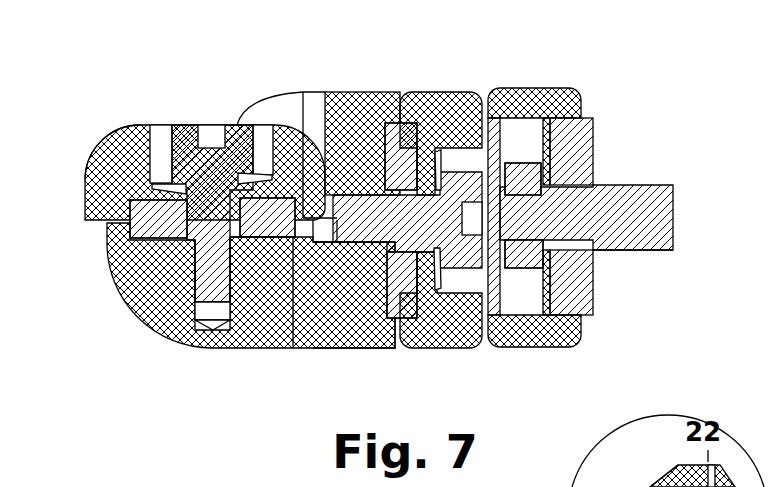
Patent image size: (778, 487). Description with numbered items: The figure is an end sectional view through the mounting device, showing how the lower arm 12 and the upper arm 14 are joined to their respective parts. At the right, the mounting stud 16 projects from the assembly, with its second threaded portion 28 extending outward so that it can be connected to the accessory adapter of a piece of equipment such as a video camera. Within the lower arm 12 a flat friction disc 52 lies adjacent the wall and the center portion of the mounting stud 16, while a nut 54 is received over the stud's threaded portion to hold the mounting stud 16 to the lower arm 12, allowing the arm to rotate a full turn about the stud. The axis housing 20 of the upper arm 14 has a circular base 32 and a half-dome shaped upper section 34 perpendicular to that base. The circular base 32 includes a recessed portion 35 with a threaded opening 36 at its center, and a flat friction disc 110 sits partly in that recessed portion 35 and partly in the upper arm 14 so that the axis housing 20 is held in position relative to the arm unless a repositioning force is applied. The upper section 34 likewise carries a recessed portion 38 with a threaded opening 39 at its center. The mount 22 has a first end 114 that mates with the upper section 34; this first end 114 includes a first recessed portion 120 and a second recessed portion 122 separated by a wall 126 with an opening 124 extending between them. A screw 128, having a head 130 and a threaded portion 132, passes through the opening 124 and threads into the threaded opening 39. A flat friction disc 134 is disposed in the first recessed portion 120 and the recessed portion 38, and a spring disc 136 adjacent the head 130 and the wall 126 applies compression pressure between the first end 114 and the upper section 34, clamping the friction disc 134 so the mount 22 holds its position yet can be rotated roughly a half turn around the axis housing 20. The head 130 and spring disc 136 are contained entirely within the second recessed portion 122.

The lower arm 12 is at (572, 352).
The upper arm 14 is at (455, 350).
The mounting stud 16 is at (645, 183).
The axis housing 20 is at (297, 350).
The mount 22 is at (85, 173).
The second threaded portion 28 is at (661, 252).
The circular base 32 is at (358, 350).
The half-dome shaped upper section 34 is at (197, 348).
The recessed portion 35 is at (392, 318).
The threaded opening 36 is at (351, 195).
The recessed portion 38 is at (257, 295).
The threaded opening 39 is at (227, 315).
The flat friction disc 52 is at (571, 132).
The nut 54 is at (522, 176).
The flat friction disc 110 is at (399, 123).
The first end 114 is at (108, 142).
The first recessed portion 120 is at (127, 208).
The second recessed portion 122 is at (152, 148).
The opening 124 is at (182, 200).
The wall 126 is at (150, 192).
The screw 128 is at (227, 125).
The head 130 is at (239, 173).
The threaded portion 132 is at (208, 287).
The flat friction disc 134 is at (118, 262).
The spring disc 136 is at (260, 176).